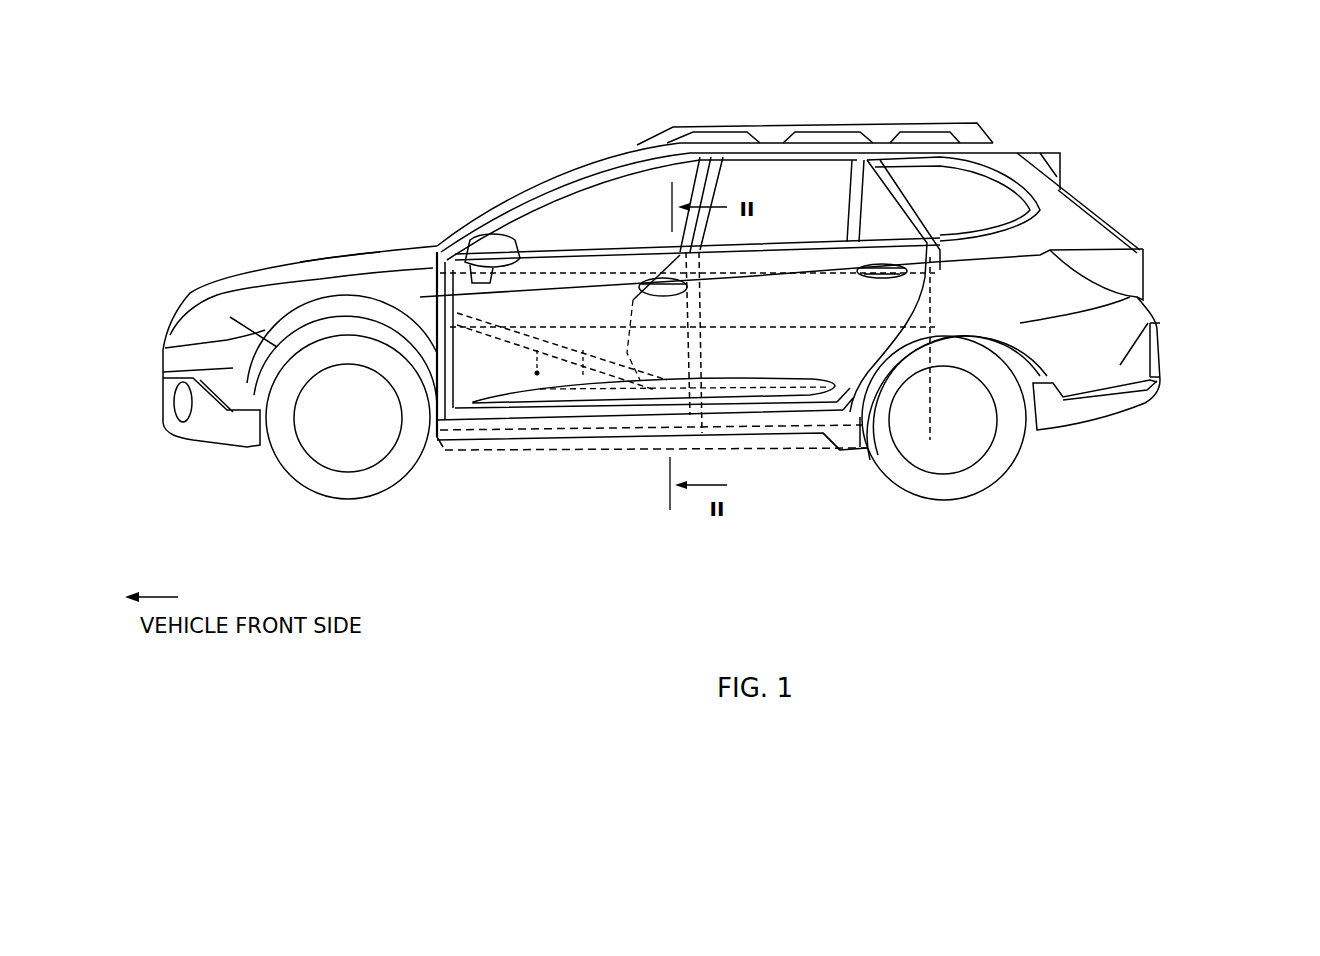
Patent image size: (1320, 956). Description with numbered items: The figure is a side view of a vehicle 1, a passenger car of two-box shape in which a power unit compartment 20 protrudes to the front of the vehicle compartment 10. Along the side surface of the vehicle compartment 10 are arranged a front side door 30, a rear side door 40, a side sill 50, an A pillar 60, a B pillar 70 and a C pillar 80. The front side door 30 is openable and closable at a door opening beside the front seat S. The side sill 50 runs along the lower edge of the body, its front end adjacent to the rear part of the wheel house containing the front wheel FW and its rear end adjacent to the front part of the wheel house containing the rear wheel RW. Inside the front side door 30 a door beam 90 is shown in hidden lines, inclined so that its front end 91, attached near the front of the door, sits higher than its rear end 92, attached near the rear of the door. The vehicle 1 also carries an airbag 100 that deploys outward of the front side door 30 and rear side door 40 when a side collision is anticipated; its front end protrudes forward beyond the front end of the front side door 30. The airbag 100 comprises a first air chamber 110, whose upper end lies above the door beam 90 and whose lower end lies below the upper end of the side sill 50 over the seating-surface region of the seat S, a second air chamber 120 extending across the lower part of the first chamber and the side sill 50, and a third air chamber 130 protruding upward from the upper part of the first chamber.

The vehicle 1 is at (226, 170).
The vehicle compartment 10 is at (567, 168).
The power unit compartment 20 is at (328, 258).
The front side door 30 is at (607, 257).
The rear side door 40 is at (783, 253).
The side sill 50 is at (828, 435).
The A pillar 60 is at (428, 400).
The B pillar 70 is at (703, 367).
The C pillar 80 is at (930, 257).
The door beam 90 is at (583, 363).
The front end of the door beam 91 is at (436, 250).
The rear end of the door beam 92 is at (667, 380).
The airbag 100 is at (955, 286).
The first air chamber 110 is at (930, 377).
The second air chamber 120 is at (928, 440).
The third air chamber 130 is at (937, 311).
The seat S is at (527, 385).
The front wheel FW is at (303, 482).
The rear wheel RW is at (983, 487).